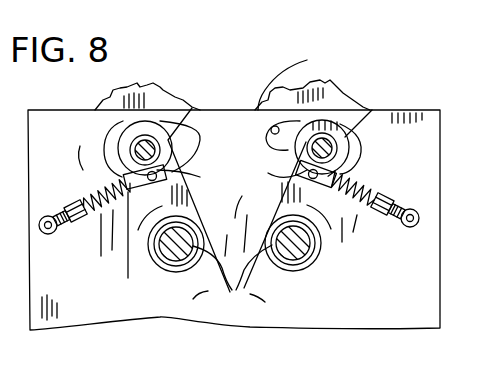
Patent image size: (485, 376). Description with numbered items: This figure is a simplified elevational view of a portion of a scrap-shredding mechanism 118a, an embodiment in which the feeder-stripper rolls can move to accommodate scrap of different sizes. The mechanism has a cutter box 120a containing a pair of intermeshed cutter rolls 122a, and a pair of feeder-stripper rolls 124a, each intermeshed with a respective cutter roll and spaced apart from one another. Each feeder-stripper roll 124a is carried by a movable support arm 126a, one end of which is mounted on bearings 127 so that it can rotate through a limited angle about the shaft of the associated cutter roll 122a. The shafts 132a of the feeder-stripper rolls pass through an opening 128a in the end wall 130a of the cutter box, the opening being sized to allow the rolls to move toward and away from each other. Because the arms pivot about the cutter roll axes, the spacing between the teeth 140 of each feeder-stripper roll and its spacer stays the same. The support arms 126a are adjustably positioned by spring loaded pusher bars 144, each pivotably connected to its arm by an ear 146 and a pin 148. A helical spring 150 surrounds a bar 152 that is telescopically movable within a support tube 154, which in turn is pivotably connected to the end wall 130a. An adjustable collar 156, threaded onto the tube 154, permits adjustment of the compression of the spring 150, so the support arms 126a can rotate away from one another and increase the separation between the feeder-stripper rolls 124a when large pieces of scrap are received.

The scrap-shredding mechanism 118a is at (255, 78).
The cutter box 120a is at (294, 75).
The cutter rolls 122a is at (182, 308).
The feeder-stripper rolls 124a is at (133, 87).
The support arms 126a is at (192, 108).
The bearings 127 is at (236, 282).
The opening 128a is at (88, 124).
The end wall 130a is at (100, 318).
The shafts 132a is at (297, 151).
The teeth 140 is at (192, 107).
The spring loaded pusher bars 144 is at (79, 244).
The ear 146 is at (268, 173).
The pin 148 is at (122, 161).
The helical spring 150 is at (101, 214).
The bar 152 is at (358, 218).
The support tube 154 is at (58, 233).
The adjustable collar 156 is at (82, 203).